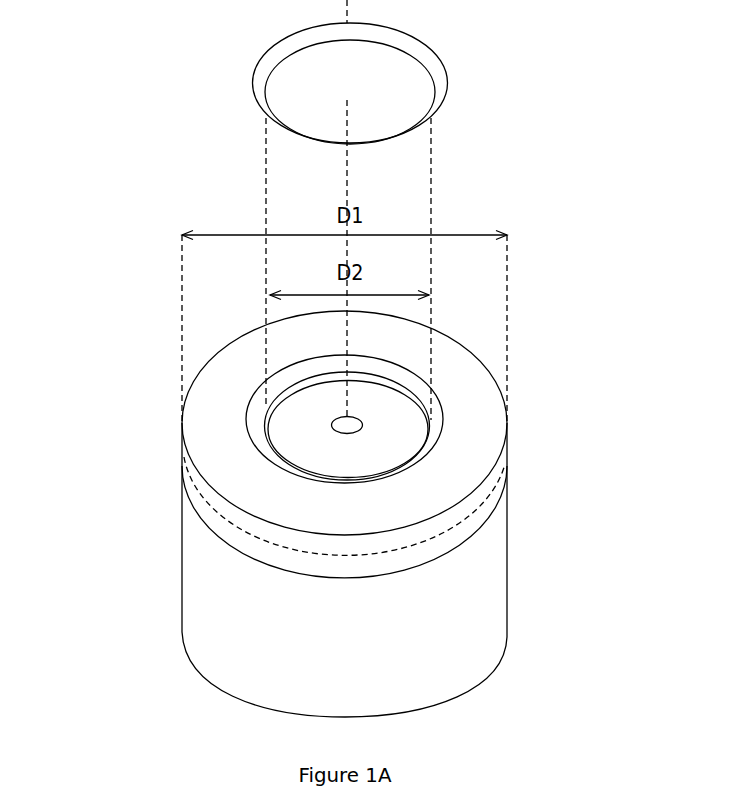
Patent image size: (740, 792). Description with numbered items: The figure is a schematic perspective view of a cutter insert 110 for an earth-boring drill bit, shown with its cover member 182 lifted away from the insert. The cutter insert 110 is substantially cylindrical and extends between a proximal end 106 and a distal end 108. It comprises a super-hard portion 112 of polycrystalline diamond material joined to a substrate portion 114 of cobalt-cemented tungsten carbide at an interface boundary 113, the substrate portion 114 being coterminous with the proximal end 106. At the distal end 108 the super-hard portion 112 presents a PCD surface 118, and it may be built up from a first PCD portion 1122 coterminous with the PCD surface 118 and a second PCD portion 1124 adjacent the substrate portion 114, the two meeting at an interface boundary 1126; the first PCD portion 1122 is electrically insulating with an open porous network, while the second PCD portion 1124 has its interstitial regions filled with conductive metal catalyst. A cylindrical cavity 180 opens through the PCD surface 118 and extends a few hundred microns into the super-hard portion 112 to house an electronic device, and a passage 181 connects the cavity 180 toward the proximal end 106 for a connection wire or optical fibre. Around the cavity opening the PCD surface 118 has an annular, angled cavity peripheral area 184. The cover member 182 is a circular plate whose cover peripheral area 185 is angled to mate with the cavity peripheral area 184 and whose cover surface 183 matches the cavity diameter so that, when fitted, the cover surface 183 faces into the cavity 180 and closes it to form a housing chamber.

The cutter insert 110 is at (156, 385).
The distal end 108 is at (518, 377).
The proximal end 106 is at (479, 687).
The super-hard portion 112 is at (475, 448).
The first PCD portion 1122 is at (500, 468).
The second PCD portion 1124 is at (492, 512).
The interface boundary 1126 is at (235, 542).
The interface boundary 113 is at (290, 582).
The substrate portion 114 is at (493, 613).
The PCD surface 118 is at (467, 372).
The cavity 180 is at (290, 435).
The passage 181 is at (362, 424).
The cavity peripheral area 184 is at (258, 412).
The cover member 182 is at (405, 32).
The cover surface 183 is at (406, 86).
The cover peripheral area 185 is at (265, 76).